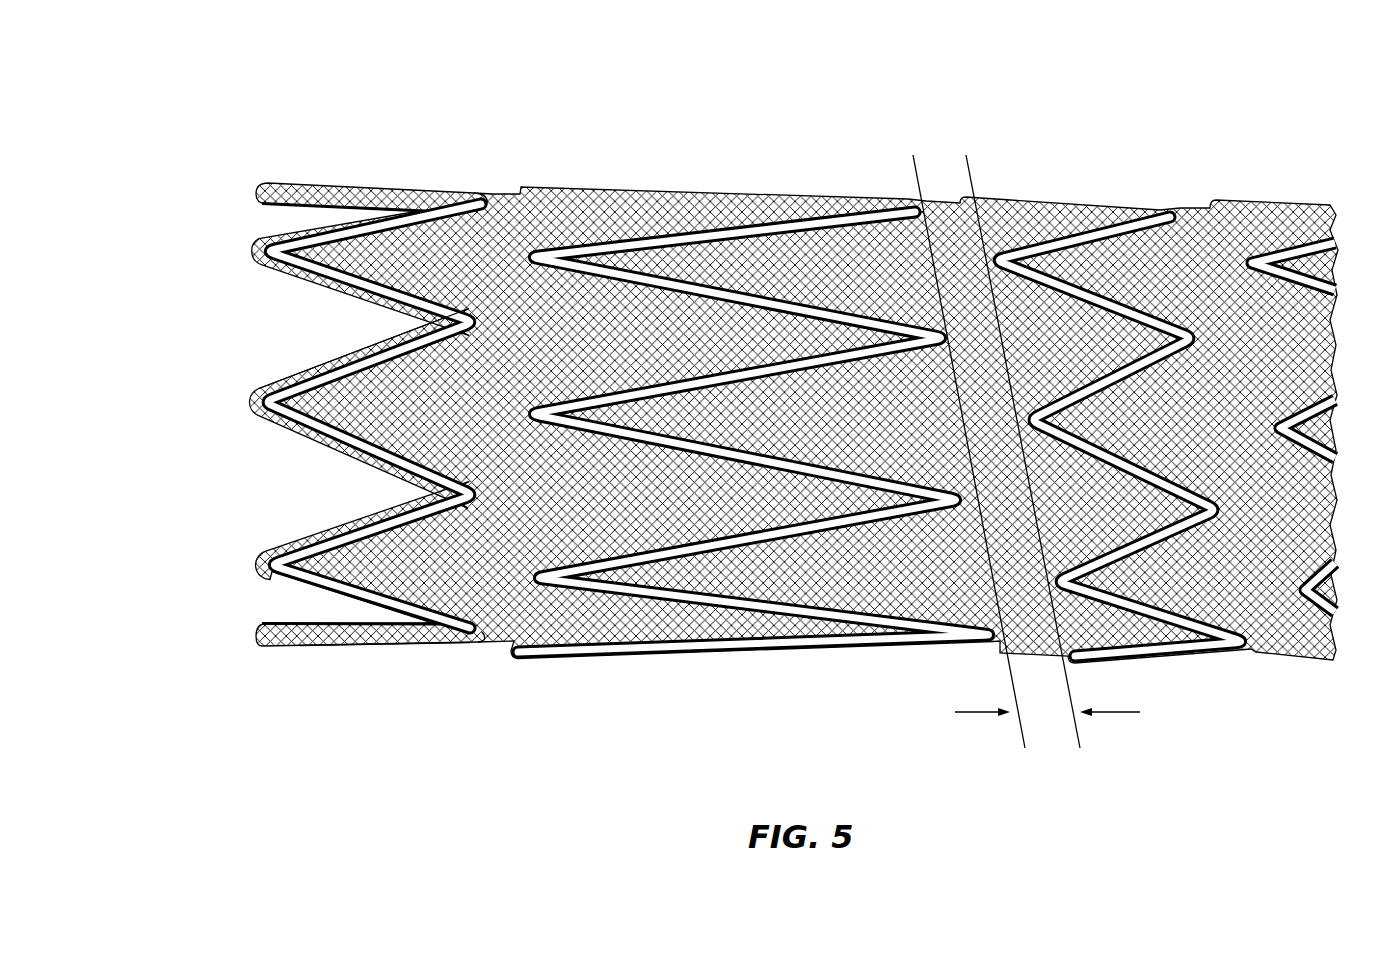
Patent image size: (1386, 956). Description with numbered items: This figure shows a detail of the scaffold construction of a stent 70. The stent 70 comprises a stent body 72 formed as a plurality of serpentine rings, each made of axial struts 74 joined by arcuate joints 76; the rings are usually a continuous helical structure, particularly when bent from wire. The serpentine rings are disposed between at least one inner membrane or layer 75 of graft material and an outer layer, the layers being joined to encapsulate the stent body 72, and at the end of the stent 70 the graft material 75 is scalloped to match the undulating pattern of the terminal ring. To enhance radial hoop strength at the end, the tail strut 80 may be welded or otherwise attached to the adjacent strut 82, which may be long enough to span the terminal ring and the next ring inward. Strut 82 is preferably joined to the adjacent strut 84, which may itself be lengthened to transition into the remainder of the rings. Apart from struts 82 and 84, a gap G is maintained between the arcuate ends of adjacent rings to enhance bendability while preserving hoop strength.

The stent 70 is at (438, 57).
The stent body 72 is at (373, 661).
The axial struts 74 is at (610, 232).
The layer of graft material 75 is at (1275, 637).
The arcuate joints 76 is at (524, 190).
The tail strut 80 is at (320, 480).
The adjacent strut 82 is at (505, 455).
The adjacent strut 84 is at (773, 468).